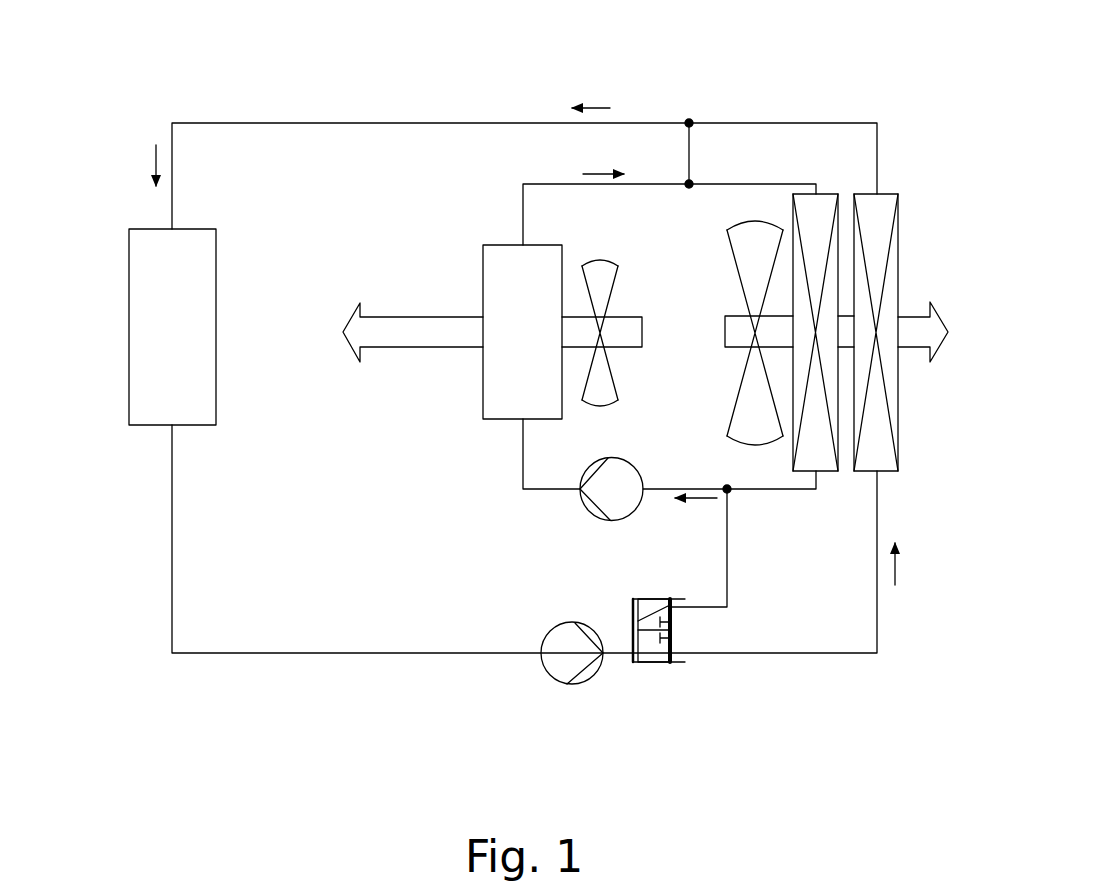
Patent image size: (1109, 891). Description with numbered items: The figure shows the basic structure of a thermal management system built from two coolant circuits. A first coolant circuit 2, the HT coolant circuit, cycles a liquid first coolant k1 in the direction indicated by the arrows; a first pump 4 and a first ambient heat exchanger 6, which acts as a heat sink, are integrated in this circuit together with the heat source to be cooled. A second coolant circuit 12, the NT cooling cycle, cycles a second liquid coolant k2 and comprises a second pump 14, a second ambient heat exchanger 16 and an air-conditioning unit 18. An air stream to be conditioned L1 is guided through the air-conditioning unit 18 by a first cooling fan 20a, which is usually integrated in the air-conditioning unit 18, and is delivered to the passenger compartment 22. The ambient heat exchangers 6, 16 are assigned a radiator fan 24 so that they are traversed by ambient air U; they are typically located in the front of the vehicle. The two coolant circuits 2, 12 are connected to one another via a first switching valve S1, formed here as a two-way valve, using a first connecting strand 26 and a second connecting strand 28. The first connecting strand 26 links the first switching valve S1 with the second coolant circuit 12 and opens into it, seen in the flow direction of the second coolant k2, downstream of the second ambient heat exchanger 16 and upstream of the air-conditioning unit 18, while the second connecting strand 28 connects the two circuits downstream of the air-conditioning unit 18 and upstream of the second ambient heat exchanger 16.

The first coolant circuit 2 is at (415, 110).
The first pump 4 is at (565, 673).
The first ambient heat exchanger 6 is at (880, 222).
The second coolant circuit 12 is at (512, 468).
The second pump 14 is at (608, 505).
The second ambient heat exchanger 16 is at (822, 206).
The air-conditioning unit 18 is at (483, 398).
The first cooling fan 20a is at (598, 258).
The passenger compartment 22 is at (302, 345).
The radiator fan 24 is at (740, 252).
The first connecting strand 26 is at (727, 557).
The second connecting strand 28 is at (693, 147).
The first coolant k1 is at (150, 172).
The second coolant k2 is at (610, 172).
The ambient air U is at (735, 327).
The air stream to be conditioned L1 is at (637, 333).
The first switching valve S1 is at (650, 598).